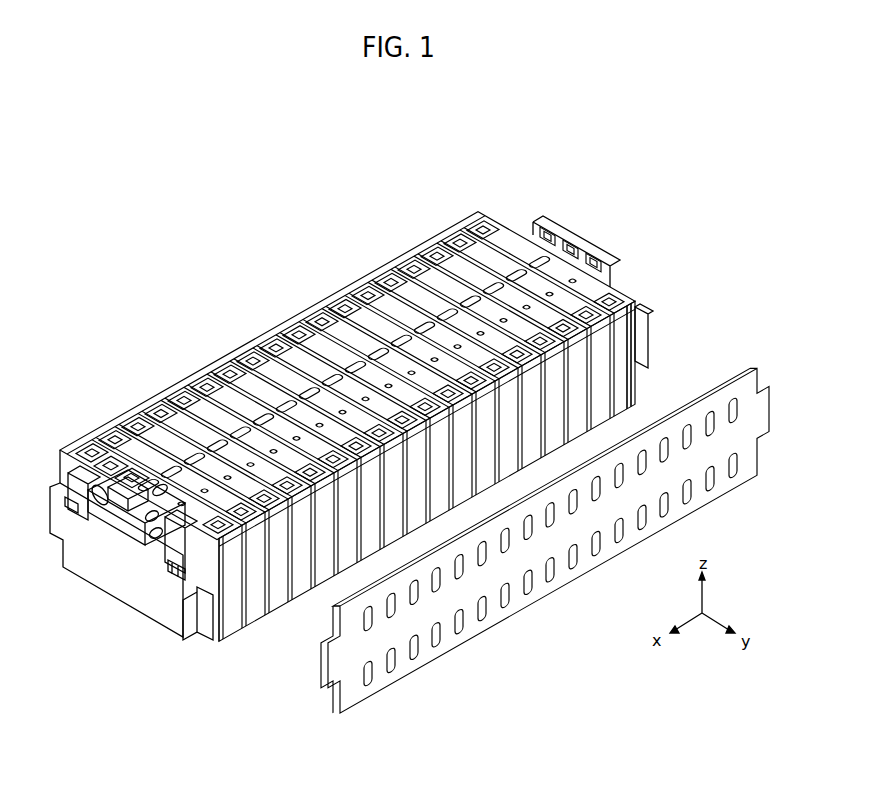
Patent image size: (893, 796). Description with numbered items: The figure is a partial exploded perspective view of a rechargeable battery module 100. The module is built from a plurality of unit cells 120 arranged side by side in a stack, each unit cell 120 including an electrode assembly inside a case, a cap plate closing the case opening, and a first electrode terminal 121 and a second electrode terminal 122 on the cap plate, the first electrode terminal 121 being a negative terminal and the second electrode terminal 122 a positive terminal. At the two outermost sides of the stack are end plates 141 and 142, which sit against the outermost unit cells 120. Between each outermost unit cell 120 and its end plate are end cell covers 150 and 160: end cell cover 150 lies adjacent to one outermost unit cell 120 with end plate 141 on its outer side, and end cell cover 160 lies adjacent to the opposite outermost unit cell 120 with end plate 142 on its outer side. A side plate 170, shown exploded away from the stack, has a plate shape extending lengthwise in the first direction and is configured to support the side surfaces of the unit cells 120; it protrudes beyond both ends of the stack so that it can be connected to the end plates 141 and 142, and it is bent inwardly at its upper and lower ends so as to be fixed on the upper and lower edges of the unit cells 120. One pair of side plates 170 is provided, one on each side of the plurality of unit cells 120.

The rechargeable battery module 100 is at (262, 292).
The unit cell 120 is at (123, 417).
The first electrode terminal 121 is at (146, 406).
The second electrode terminal 122 is at (281, 512).
The end plate 141 is at (117, 592).
The end plate 142 is at (583, 260).
The end cell cover 150 is at (213, 637).
The end cell cover 160 is at (637, 380).
The side plate 170 is at (562, 578).